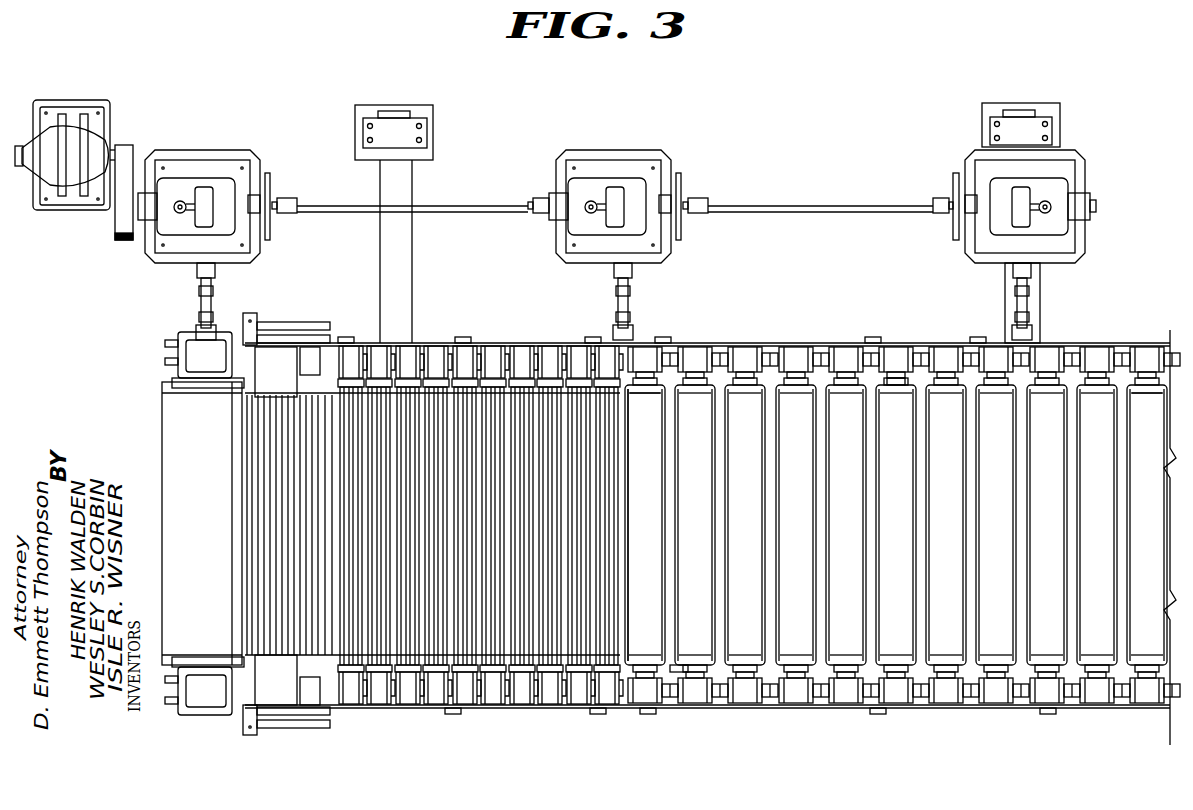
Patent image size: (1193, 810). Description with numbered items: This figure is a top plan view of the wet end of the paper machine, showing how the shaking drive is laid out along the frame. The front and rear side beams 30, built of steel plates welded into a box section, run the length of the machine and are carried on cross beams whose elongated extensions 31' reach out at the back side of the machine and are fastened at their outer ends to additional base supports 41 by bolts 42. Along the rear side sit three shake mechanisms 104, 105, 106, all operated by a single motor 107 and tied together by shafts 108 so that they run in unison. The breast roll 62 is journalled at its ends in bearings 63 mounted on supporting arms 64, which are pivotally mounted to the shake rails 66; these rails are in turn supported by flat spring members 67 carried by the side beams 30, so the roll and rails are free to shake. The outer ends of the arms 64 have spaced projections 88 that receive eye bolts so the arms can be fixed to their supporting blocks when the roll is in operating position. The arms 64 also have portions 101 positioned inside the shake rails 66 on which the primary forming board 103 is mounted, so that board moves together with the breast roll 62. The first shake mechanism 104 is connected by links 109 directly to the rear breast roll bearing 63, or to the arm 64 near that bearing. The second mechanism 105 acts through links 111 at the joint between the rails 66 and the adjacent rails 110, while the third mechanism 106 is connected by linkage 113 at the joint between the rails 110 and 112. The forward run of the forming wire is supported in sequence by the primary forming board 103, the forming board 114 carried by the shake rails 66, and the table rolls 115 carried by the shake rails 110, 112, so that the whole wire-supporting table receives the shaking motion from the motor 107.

The side beams 30 is at (880, 388).
The elongated extension 31' is at (726, 251).
The base supports 41 is at (428, 153).
The bolts 42 is at (426, 125).
The breast roll 62 is at (202, 523).
The bearings 63 is at (205, 523).
The arms 64 is at (244, 314).
The shake rails 66 is at (520, 343).
The flat spring members 67 is at (340, 337).
The spaced projections 88 is at (165, 342).
The portions 101 is at (222, 385).
The primary forming board 103 is at (237, 514).
The shake mechanism 104 is at (243, 152).
The shake mechanism 105 is at (676, 160).
The shake mechanism 106 is at (1092, 160).
The motor 107 is at (74, 170).
The shafts 108 is at (447, 206).
The links 109 is at (214, 292).
The shake rails 110 is at (766, 343).
The links 111 is at (632, 288).
The shake rails 112 is at (1085, 343).
The linkage 113 is at (1032, 298).
The forming board 114 is at (620, 492).
The table rolls 115 is at (898, 460).